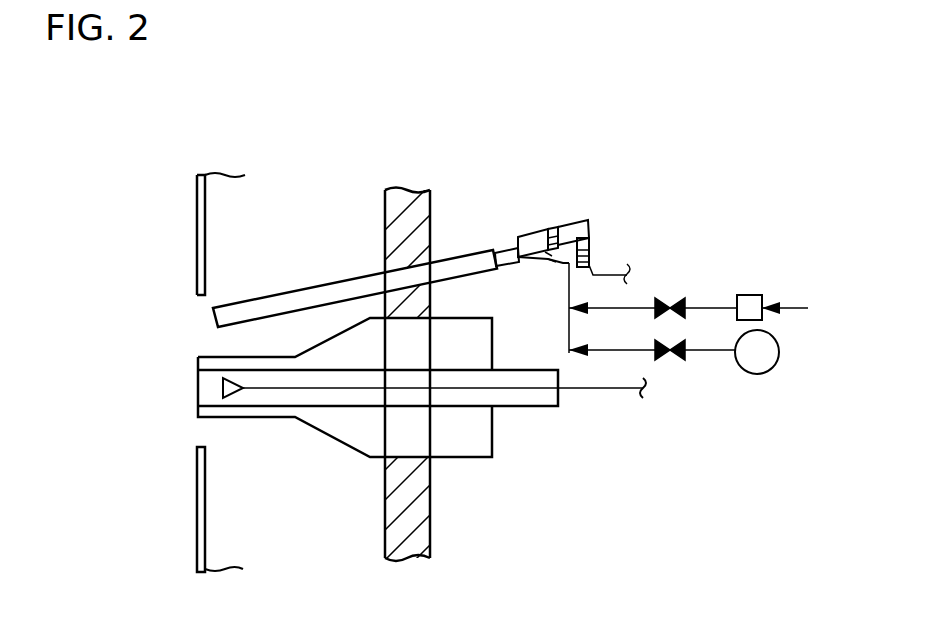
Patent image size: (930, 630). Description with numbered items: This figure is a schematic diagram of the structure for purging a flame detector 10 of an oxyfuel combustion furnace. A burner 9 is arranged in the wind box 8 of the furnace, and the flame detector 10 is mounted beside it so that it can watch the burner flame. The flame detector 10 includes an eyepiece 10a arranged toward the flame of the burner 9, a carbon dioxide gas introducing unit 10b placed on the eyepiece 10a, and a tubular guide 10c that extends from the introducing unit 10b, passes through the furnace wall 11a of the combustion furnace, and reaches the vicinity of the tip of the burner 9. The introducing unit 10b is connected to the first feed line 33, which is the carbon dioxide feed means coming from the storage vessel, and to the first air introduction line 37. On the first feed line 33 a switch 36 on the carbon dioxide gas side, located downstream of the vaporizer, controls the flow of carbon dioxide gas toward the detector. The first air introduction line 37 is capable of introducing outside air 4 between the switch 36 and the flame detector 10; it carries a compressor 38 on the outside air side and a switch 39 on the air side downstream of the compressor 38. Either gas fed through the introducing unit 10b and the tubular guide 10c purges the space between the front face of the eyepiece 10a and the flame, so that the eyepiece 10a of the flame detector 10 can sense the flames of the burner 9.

The air 4 is at (800, 308).
The wind box 8 is at (294, 498).
The burner 9 is at (500, 478).
The flame detector 10 is at (596, 210).
The eyepiece 10a is at (549, 247).
The carbon dioxide gas introducing unit 10b is at (517, 240).
The tubular guide 10c is at (292, 290).
The furnace wall 11a is at (400, 213).
The first feed line 33 is at (705, 352).
The switch on the carbon dioxide gas side 36 is at (665, 364).
The first air introduction line 37 is at (713, 306).
The compressor 38 is at (753, 295).
The switch on the air side 39 is at (661, 296).